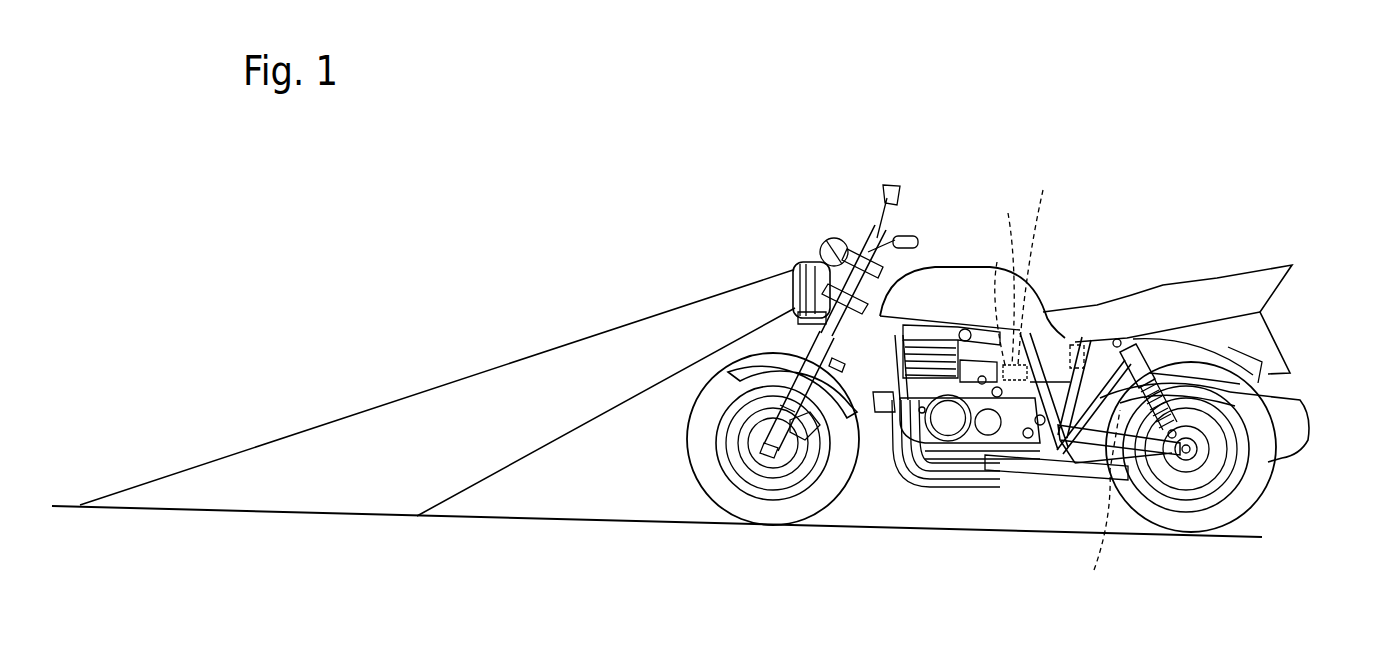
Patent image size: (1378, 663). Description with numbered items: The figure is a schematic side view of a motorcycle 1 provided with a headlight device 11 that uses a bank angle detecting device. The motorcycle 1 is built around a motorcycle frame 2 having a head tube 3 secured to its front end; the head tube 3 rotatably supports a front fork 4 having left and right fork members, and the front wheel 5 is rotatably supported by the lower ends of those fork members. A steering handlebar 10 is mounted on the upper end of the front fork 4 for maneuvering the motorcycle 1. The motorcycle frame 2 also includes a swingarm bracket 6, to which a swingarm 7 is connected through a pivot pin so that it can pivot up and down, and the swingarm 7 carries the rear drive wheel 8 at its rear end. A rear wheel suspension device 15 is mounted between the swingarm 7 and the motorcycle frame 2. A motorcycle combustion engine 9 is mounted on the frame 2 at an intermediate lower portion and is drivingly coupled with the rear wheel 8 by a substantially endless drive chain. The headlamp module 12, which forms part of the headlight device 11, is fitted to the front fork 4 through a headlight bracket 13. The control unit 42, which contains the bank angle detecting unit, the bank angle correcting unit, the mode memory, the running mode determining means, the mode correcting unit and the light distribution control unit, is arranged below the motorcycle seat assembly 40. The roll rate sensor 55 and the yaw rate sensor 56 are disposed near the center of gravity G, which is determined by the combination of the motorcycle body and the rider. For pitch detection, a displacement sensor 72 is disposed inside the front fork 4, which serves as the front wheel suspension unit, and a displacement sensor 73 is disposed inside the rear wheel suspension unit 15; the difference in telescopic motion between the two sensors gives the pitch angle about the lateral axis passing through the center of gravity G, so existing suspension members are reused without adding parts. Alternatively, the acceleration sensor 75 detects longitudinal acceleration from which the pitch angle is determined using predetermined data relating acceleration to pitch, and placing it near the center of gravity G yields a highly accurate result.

The motorcycle 1 is at (1105, 197).
The motorcycle frame 2 is at (1050, 317).
The head tube 3 is at (913, 267).
The front fork 4 is at (790, 317).
The front wheel 5 is at (688, 460).
The swingarm bracket 6 is at (1028, 440).
The swingarm 7 is at (1090, 468).
The rear drive wheel 8 is at (1280, 457).
The motorcycle combustion engine 9 is at (947, 422).
The steering handlebar 10 is at (900, 237).
The headlight device 11 is at (795, 260).
The headlamp module 12 is at (803, 260).
The headlight bracket 13 is at (843, 320).
The rear wheel suspension device 15 is at (1165, 408).
The motorcycle seat assembly 40 is at (1160, 298).
The control unit 42 is at (1078, 340).
The roll rate sensor 55 is at (995, 298).
The yaw rate sensor 56 is at (1008, 273).
The displacement sensor 72 is at (838, 356).
The displacement sensor 73 is at (1098, 507).
The acceleration sensor 75 is at (1032, 268).
The center of gravity G is at (993, 428).